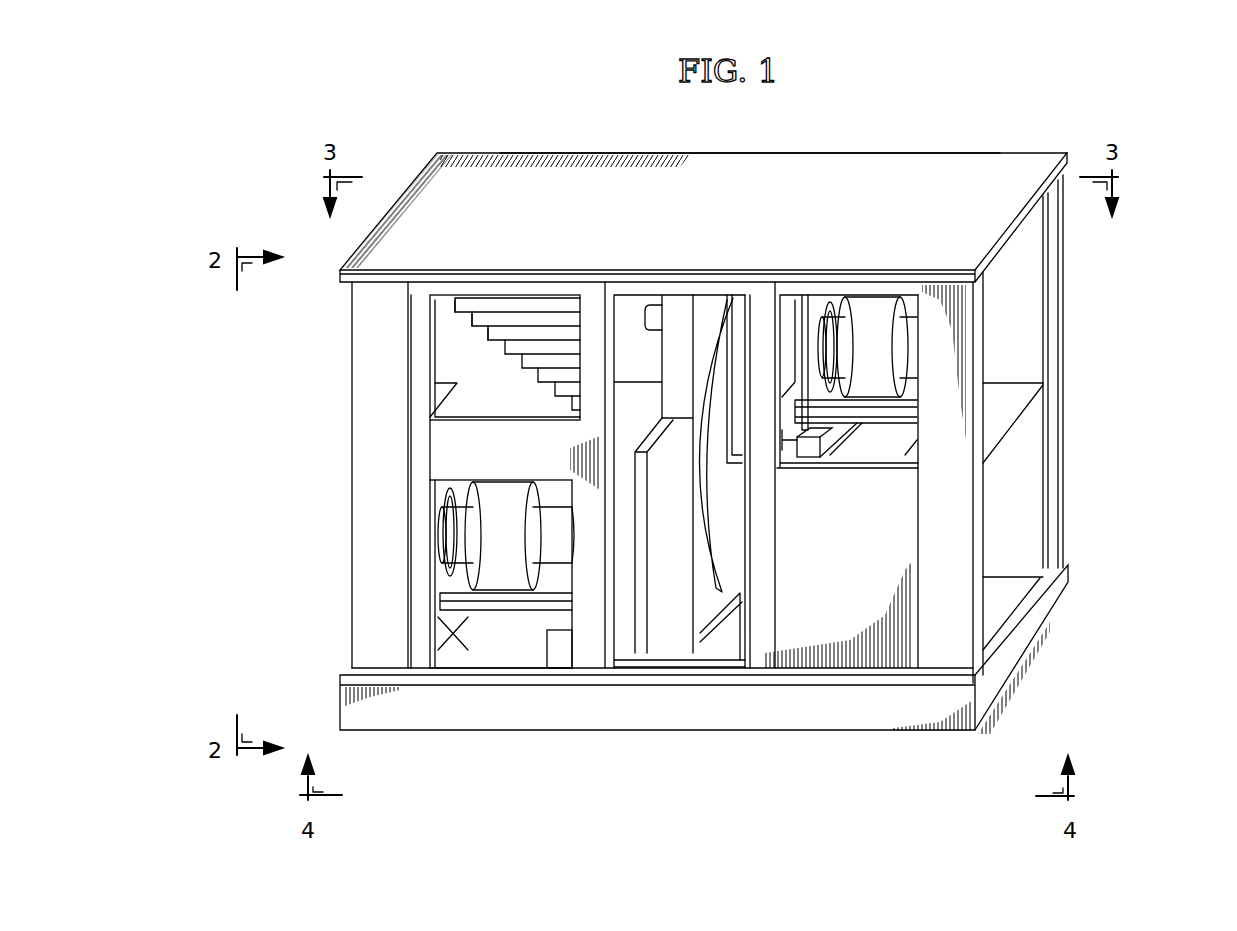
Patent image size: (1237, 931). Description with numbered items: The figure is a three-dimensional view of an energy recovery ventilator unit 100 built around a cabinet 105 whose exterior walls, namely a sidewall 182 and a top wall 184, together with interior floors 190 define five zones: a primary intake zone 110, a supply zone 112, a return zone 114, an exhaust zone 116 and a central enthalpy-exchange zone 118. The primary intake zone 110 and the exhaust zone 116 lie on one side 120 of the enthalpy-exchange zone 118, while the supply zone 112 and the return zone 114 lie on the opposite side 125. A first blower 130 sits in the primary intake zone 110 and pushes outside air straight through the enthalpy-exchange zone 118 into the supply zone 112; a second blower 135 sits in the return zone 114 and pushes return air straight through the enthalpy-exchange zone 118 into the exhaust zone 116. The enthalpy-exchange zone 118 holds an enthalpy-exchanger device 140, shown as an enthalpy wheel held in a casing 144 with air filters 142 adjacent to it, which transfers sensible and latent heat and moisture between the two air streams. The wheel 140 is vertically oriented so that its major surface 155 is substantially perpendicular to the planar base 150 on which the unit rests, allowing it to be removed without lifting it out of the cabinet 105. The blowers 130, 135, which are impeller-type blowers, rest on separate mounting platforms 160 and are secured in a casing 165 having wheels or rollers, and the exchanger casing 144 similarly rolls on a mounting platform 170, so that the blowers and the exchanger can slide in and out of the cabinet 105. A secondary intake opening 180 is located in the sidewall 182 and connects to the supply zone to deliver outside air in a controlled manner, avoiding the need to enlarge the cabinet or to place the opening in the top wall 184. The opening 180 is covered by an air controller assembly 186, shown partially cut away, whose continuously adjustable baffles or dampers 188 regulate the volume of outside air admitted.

The energy recovery ventilator unit 100 is at (522, 105).
The cabinet 105 is at (997, 150).
The primary intake zone 110 is at (792, 333).
The supply zone 112 is at (445, 347).
The return zone 114 is at (458, 598).
The exhaust zone 116 is at (1013, 520).
The enthalpy-exchange zone 118 is at (640, 302).
The one side 120 is at (1122, 492).
The opposite side 125 is at (268, 492).
The first blower 130 is at (872, 310).
The second blower 135 is at (503, 495).
The enthalpy-exchanger device 140 is at (728, 623).
The air filters 142 is at (733, 302).
The casing 144 is at (678, 302).
The planar base 150 is at (1020, 655).
The major surface 155 is at (803, 465).
The mounting platforms 160 is at (557, 645).
The casing 165 is at (487, 607).
The mounting platform 170 is at (680, 650).
The secondary intake opening 180 is at (488, 424).
The sidewall 182 is at (418, 303).
The top wall 184 is at (790, 170).
The air controller assembly 186 is at (590, 292).
The baffles or dampers 188 is at (563, 337).
The interior floors 190 is at (458, 386).